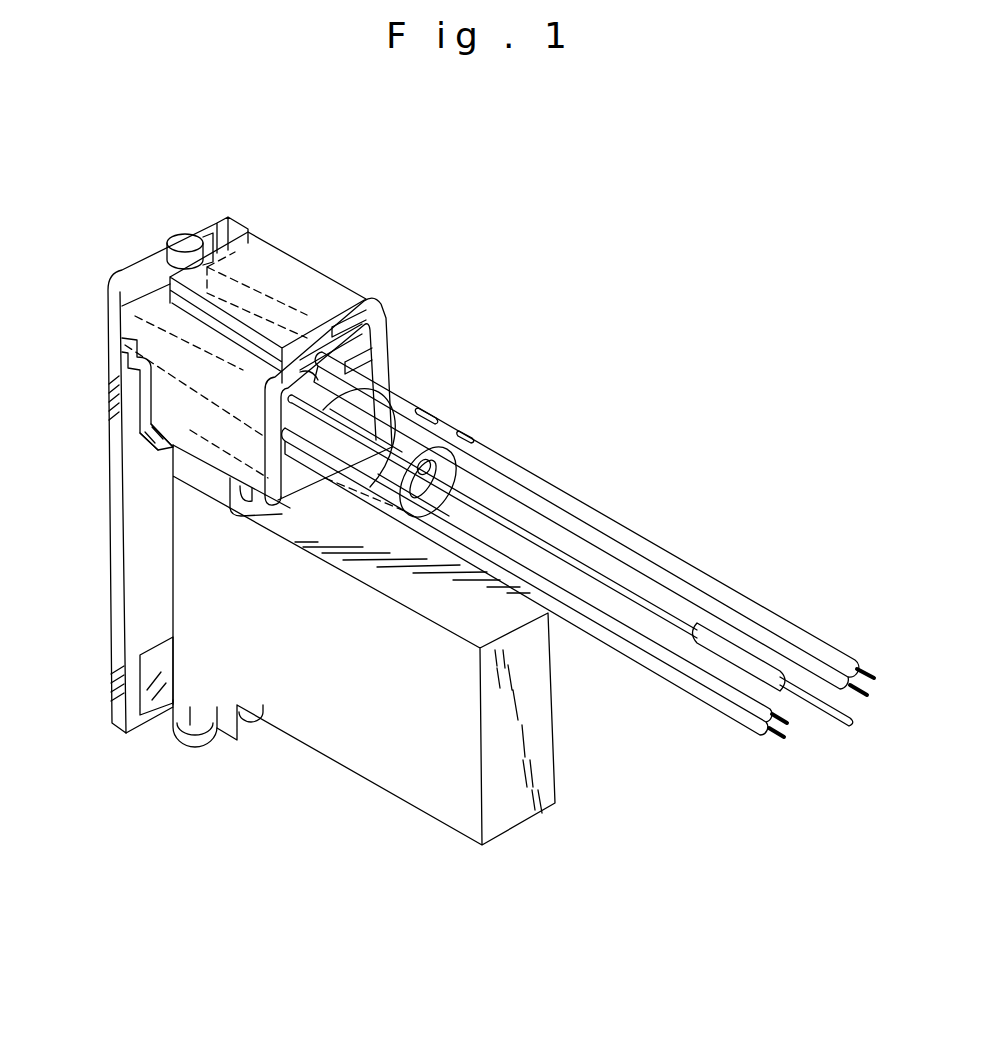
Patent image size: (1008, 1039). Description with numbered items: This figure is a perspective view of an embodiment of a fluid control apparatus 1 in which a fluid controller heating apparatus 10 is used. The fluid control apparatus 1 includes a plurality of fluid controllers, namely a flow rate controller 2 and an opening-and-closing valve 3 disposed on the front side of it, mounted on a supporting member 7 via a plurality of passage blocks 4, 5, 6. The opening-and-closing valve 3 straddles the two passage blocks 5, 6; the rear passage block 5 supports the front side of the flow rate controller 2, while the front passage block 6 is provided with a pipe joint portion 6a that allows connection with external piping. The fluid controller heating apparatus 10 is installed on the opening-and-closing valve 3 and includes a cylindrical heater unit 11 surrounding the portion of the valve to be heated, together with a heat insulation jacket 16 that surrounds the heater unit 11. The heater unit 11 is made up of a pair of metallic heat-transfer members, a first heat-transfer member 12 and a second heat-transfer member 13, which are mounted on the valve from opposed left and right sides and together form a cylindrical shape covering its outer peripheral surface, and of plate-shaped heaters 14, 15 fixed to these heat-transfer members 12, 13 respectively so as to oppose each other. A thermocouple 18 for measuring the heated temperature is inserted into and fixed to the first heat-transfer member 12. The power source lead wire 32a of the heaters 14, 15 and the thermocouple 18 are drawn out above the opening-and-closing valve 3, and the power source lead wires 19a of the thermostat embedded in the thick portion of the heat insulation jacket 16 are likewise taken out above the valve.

The fluid control apparatus 1 is at (465, 352).
The flow rate controller 2 is at (372, 787).
The opening-and-closing valve 3 is at (458, 477).
The passage block 4 is at (167, 703).
The passage block 5 is at (130, 450).
The passage block 6 is at (130, 363).
The pipe joint portion 6a is at (172, 237).
The supporting member 7 is at (143, 578).
The fluid controller heating apparatus 10 is at (298, 246).
The heater unit 11 is at (307, 383).
The first heat-transfer member 12 is at (290, 416).
The second heat-transfer member 13 is at (357, 367).
The heater 14 is at (288, 468).
The heater 15 is at (370, 361).
The heat insulation jacket 16 is at (262, 247).
The thermocouple 18 is at (728, 648).
The power source lead wires 19a is at (437, 405).
The power source lead wire 32a is at (712, 575).